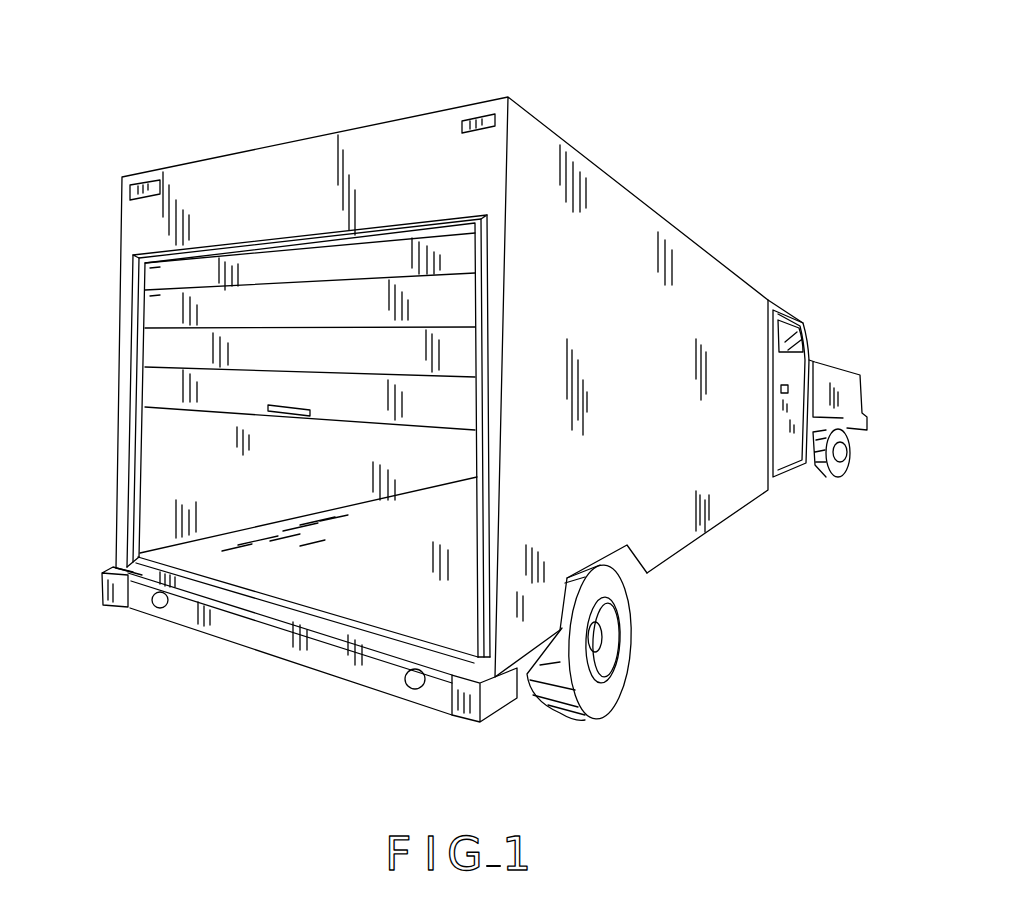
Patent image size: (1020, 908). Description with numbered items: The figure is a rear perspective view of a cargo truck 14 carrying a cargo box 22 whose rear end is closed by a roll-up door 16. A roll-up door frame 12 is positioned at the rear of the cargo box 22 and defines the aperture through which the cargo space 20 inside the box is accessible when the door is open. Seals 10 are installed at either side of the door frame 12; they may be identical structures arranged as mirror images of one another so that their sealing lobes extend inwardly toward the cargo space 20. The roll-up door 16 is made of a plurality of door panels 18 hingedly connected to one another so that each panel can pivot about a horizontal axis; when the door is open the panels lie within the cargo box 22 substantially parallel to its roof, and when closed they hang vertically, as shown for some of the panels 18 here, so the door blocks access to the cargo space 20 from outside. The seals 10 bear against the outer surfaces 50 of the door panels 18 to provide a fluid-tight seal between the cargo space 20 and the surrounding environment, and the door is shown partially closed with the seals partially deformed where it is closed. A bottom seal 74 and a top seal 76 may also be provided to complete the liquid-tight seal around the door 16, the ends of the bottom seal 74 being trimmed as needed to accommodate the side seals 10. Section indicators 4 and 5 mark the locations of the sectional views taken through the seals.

The seals 10 is at (139, 528).
The roll-up door frame 12 is at (133, 307).
The truck 14 is at (627, 82).
The roll-up door 16 is at (266, 244).
The door panels 18 is at (460, 297).
The cargo space 20 is at (322, 477).
The cargo box 22 is at (537, 127).
The outer surfaces 50 is at (162, 303).
The bottom seal 74 is at (315, 603).
The top seal 76 is at (386, 222).
The section line 4- 4 is at (175, 461).
The section line 5- 5 is at (180, 350).